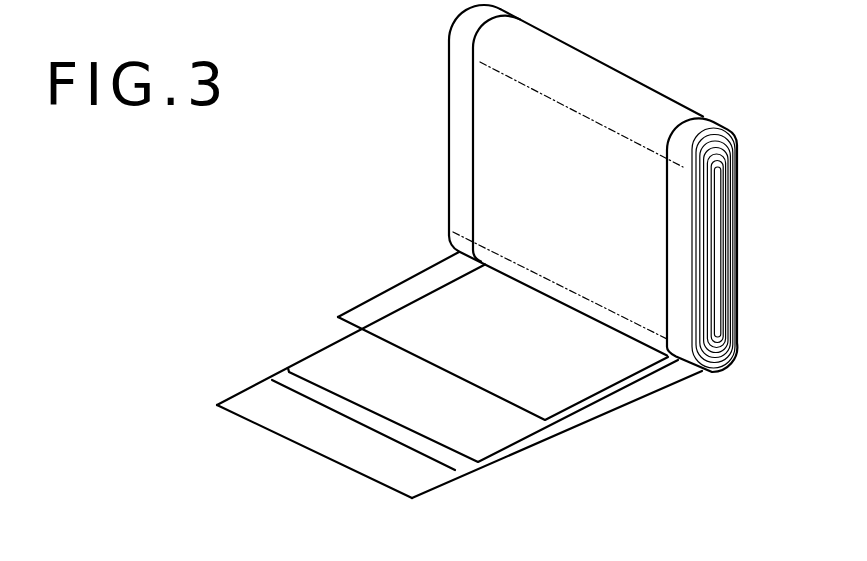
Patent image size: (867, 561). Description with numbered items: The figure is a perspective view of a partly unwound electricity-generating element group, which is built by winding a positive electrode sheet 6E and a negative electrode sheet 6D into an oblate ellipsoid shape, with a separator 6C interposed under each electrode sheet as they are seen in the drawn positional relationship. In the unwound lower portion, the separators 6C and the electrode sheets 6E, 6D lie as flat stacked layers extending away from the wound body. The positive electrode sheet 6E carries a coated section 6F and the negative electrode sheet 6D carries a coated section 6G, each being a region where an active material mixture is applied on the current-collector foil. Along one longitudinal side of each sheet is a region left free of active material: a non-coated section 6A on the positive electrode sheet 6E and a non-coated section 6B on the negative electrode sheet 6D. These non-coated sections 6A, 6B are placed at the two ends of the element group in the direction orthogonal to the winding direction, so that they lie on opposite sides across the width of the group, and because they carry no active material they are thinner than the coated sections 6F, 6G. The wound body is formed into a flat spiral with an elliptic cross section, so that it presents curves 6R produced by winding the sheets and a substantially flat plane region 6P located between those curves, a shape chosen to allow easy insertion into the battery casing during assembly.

The non-coated section 6A is at (456, 140).
The non-coated section 6B is at (677, 252).
The separator 6C is at (330, 350).
The negative electrode sheet 6D is at (227, 400).
The positive electrode sheet 6E is at (407, 297).
The coated section 6F is at (477, 352).
The coated section 6G is at (423, 447).
The flat plane region 6P is at (558, 273).
The curve 6R is at (642, 97).